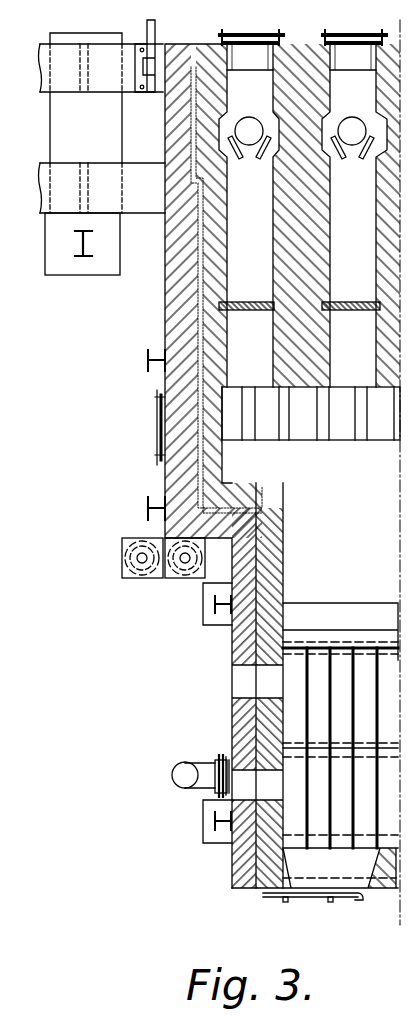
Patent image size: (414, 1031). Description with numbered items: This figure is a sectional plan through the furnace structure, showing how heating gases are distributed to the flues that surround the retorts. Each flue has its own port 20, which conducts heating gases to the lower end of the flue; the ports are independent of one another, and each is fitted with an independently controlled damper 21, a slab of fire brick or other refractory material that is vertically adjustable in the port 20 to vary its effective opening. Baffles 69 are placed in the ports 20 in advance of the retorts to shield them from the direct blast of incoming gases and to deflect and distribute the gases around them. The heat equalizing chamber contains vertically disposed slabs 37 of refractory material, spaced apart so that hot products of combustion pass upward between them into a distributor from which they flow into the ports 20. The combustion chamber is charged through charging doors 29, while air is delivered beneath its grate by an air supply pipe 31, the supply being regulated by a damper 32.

The port 20 is at (232, 258).
The damper 21 is at (240, 318).
The baffle 69 is at (238, 160).
The slab 37 is at (330, 412).
The air supply pipe 31 is at (185, 768).
The damper 32 is at (218, 757).
The charging door 29 is at (352, 901).